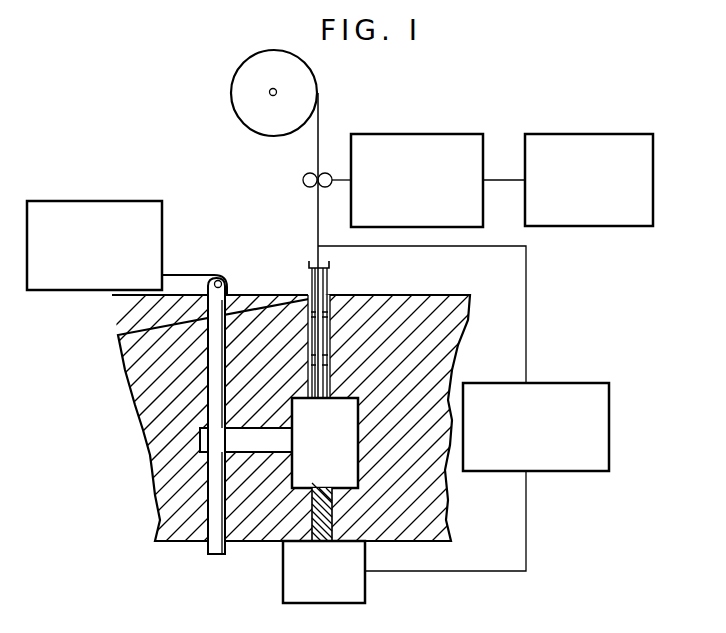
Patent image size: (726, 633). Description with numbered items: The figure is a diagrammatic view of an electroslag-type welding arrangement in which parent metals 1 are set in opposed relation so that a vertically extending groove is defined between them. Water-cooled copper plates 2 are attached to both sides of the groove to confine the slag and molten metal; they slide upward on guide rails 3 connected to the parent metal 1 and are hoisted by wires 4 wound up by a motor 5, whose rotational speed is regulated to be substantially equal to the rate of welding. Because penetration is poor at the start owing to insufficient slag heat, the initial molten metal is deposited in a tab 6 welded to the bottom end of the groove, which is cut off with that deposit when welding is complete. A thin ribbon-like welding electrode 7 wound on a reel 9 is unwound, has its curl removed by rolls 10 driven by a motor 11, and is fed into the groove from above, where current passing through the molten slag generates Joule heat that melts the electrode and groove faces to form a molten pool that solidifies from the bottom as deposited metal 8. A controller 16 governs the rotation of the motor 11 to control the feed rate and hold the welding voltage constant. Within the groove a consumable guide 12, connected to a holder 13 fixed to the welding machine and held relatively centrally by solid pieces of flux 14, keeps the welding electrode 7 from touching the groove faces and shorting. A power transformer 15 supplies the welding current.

The parent metals 1 is at (151, 470).
The copper plates 2 is at (358, 437).
The guide rails 3 is at (207, 352).
The wires 4 is at (192, 275).
The motor 5 is at (94, 200).
The tab 6 is at (286, 568).
The welding electrode 7 is at (321, 104).
The deposited metal 8 is at (334, 518).
The reel 9 is at (233, 101).
The rolls 10 is at (302, 180).
The motor 11 is at (483, 225).
The consumable guide 12 is at (330, 271).
The holder 13 is at (310, 269).
The solid pieces of flux 14 is at (327, 317).
The power transformer 15 is at (610, 427).
The controller 16 is at (654, 180).